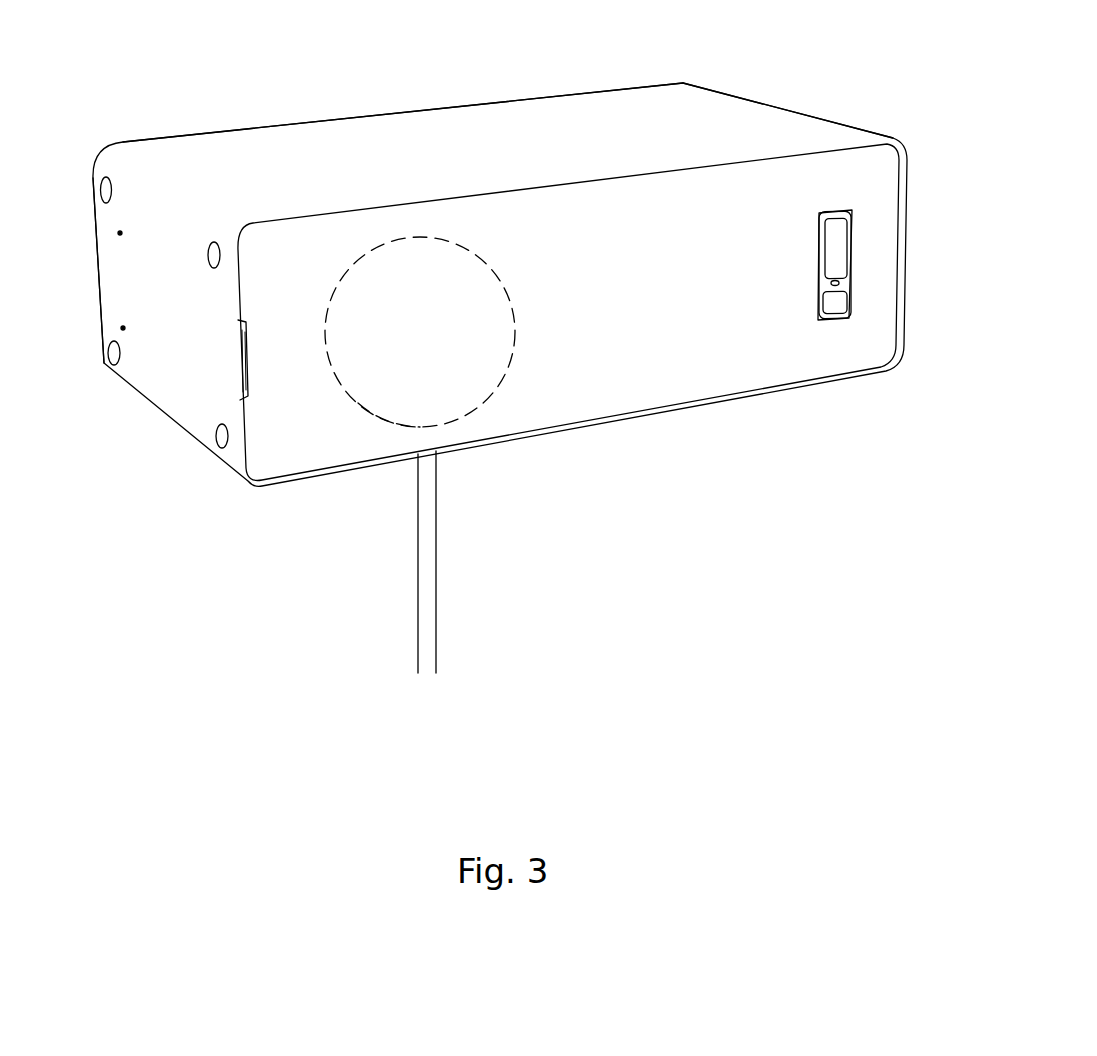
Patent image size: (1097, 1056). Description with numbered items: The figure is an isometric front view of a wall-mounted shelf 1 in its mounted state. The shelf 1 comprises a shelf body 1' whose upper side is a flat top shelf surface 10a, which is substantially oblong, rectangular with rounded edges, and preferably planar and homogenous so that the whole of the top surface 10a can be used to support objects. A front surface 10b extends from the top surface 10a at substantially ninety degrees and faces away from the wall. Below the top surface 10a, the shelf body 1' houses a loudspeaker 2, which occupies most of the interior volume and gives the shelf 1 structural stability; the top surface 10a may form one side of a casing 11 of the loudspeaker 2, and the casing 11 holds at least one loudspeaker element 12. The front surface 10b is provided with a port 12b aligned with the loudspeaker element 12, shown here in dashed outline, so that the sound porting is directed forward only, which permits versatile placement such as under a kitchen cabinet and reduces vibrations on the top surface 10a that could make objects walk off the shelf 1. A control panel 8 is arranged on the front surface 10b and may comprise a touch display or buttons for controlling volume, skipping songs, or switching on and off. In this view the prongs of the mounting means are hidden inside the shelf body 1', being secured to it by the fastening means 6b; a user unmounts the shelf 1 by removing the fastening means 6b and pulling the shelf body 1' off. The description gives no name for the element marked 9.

The wall-mounted shelf 1 is at (880, 51).
The shelf body 1' is at (403, 109).
The loudspeaker 2 is at (643, 402).
The fastening means 6b is at (123, 330).
The control panel 8 is at (841, 283).
The support pole 9 is at (423, 592).
The top shelf surface 10a is at (683, 84).
The front surface 10b is at (713, 365).
The casing 11 is at (197, 407).
The loudspeaker element 12 is at (358, 403).
The port 12b is at (450, 273).